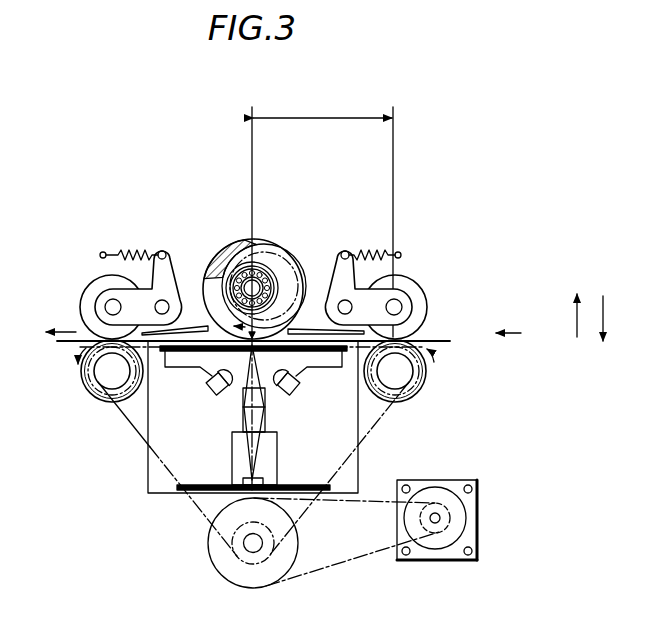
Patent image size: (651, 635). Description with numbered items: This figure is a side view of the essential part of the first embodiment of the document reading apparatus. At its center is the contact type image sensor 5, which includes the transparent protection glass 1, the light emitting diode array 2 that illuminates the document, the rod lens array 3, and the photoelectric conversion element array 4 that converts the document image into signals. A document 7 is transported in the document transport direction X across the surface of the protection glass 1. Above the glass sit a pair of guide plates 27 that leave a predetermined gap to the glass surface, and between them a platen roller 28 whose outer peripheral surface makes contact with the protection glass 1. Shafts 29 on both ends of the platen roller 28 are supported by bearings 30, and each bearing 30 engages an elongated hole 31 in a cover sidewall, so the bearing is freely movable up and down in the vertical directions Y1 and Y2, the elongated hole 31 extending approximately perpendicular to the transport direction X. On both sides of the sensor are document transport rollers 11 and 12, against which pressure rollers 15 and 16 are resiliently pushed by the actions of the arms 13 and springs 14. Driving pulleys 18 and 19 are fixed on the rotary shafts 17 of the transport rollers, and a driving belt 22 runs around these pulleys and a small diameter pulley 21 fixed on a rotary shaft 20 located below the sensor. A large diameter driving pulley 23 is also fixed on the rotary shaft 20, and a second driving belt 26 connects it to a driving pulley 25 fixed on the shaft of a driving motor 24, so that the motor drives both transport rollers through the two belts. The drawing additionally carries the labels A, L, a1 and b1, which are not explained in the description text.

The protection glass 1 is at (318, 348).
The light emitting diode array 2 is at (273, 400).
The rod lens array 3 is at (243, 418).
The photoelectric conversion element array 4 is at (190, 494).
The contact type image sensor 5 is at (306, 419).
The document 7 is at (435, 339).
The document transport roller 11 is at (430, 381).
The document transport roller 12 is at (87, 390).
The arm 13 is at (176, 247).
The spring 14 is at (123, 250).
The pressure roller 15 is at (425, 295).
The pressure roller 16 is at (88, 290).
The rotary shaft 17 is at (103, 371).
The driving pulley 18 is at (398, 409).
The driving pulley 19 is at (115, 421).
The rotary shaft 20 is at (248, 547).
The small diameter pulley 21 is at (224, 524).
The driving belt 22 is at (168, 481).
The large diameter driving pulley 23 is at (299, 562).
The driving motor 24 is at (455, 561).
The driving pulley 25 is at (424, 530).
The driving belt 26 is at (368, 560).
The guide plate 27 is at (180, 332).
The platen roller 28 is at (262, 237).
The shaft 29 is at (280, 258).
The bearing 30 is at (272, 276).
The elongated hole 31 is at (235, 240).
The point A is at (215, 238).
The distance L is at (322, 218).
The document transport direction X is at (270, 333).
The vertical direction Y1 is at (574, 298).
The vertical direction Y2 is at (607, 335).
The rotation a1 is at (251, 357).
The rotation b1 is at (222, 310).